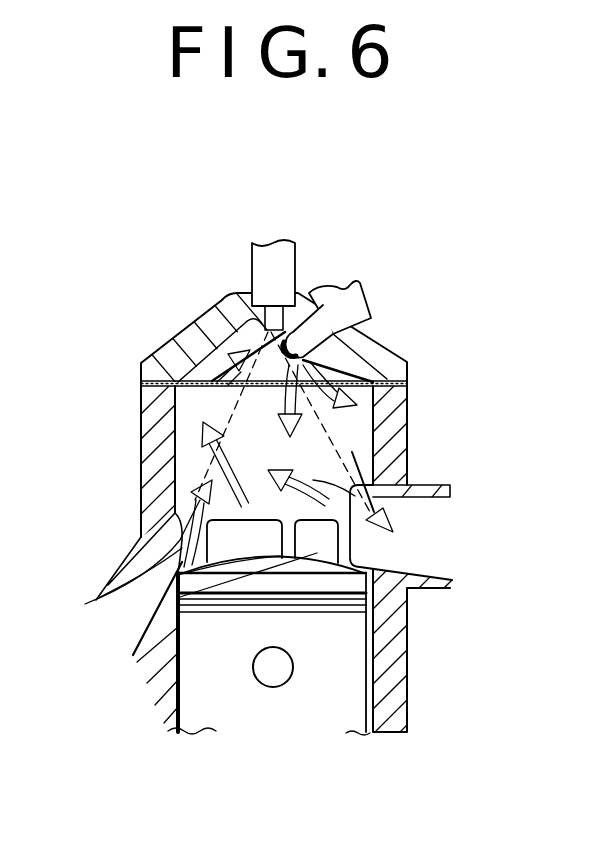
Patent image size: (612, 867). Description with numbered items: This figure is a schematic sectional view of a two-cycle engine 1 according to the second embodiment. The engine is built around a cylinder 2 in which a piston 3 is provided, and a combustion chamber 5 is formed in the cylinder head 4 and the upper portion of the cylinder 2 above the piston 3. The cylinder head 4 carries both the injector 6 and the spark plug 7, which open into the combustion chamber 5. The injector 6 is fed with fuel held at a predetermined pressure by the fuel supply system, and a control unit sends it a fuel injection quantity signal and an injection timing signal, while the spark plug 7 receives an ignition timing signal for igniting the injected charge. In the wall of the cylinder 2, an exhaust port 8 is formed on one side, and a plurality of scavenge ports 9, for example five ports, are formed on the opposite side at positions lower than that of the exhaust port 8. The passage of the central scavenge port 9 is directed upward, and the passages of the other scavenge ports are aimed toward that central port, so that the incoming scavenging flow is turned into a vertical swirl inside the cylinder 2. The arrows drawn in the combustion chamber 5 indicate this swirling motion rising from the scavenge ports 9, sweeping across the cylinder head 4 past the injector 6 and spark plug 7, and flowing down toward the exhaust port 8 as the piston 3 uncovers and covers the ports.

The two-cycle engine 1 is at (128, 435).
The cylinder 2 is at (162, 405).
The piston 3 is at (362, 658).
The cylinder head 4 is at (390, 358).
The combustion chamber 5 is at (238, 336).
The injector 6 is at (290, 253).
The spark plug 7 is at (347, 289).
The exhaust port 8 is at (383, 552).
The scavenge ports 9 is at (178, 566).